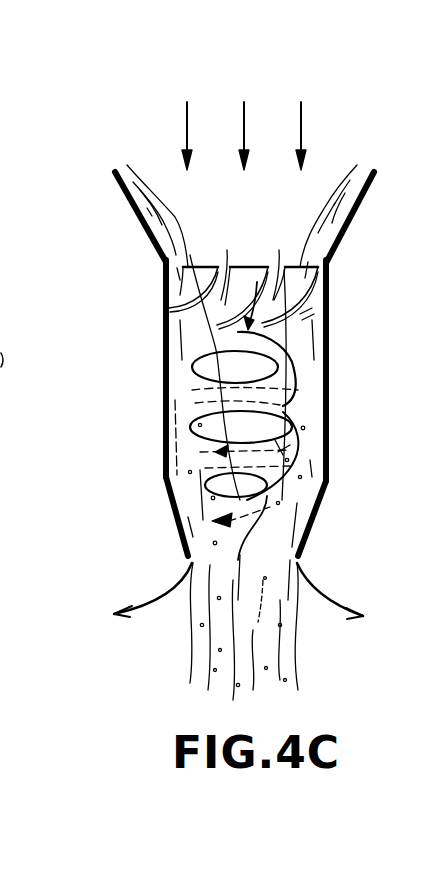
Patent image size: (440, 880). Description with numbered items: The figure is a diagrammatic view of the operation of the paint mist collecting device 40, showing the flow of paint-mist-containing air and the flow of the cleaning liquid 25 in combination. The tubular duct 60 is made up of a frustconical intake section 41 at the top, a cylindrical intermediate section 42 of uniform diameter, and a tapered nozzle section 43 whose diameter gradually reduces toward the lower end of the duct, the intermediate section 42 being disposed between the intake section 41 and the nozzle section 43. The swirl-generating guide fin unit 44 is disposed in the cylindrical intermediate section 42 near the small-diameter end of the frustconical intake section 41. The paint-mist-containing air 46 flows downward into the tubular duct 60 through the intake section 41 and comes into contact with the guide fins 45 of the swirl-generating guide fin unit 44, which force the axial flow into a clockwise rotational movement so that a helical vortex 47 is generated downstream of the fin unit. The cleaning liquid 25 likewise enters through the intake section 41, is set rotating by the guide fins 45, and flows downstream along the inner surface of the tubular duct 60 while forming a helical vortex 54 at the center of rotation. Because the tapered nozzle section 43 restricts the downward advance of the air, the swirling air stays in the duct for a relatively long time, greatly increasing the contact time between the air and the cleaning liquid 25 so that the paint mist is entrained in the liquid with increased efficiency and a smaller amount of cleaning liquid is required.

The paint mist collecting device 40 is at (137, 437).
The frustconical intake section 41 is at (354, 221).
The cylindrical intermediate section 42 is at (329, 362).
The tapered nozzle section 43 is at (318, 503).
The swirl-generating guide fin unit 44 is at (182, 287).
The guide fins 45 is at (307, 318).
The paint-mist-containing air 46 is at (301, 130).
The helical vortex 47 is at (300, 397).
The cleaning liquid 25 is at (329, 458).
The helical vortex 54 is at (203, 453).
The tubular duct 60 is at (162, 359).